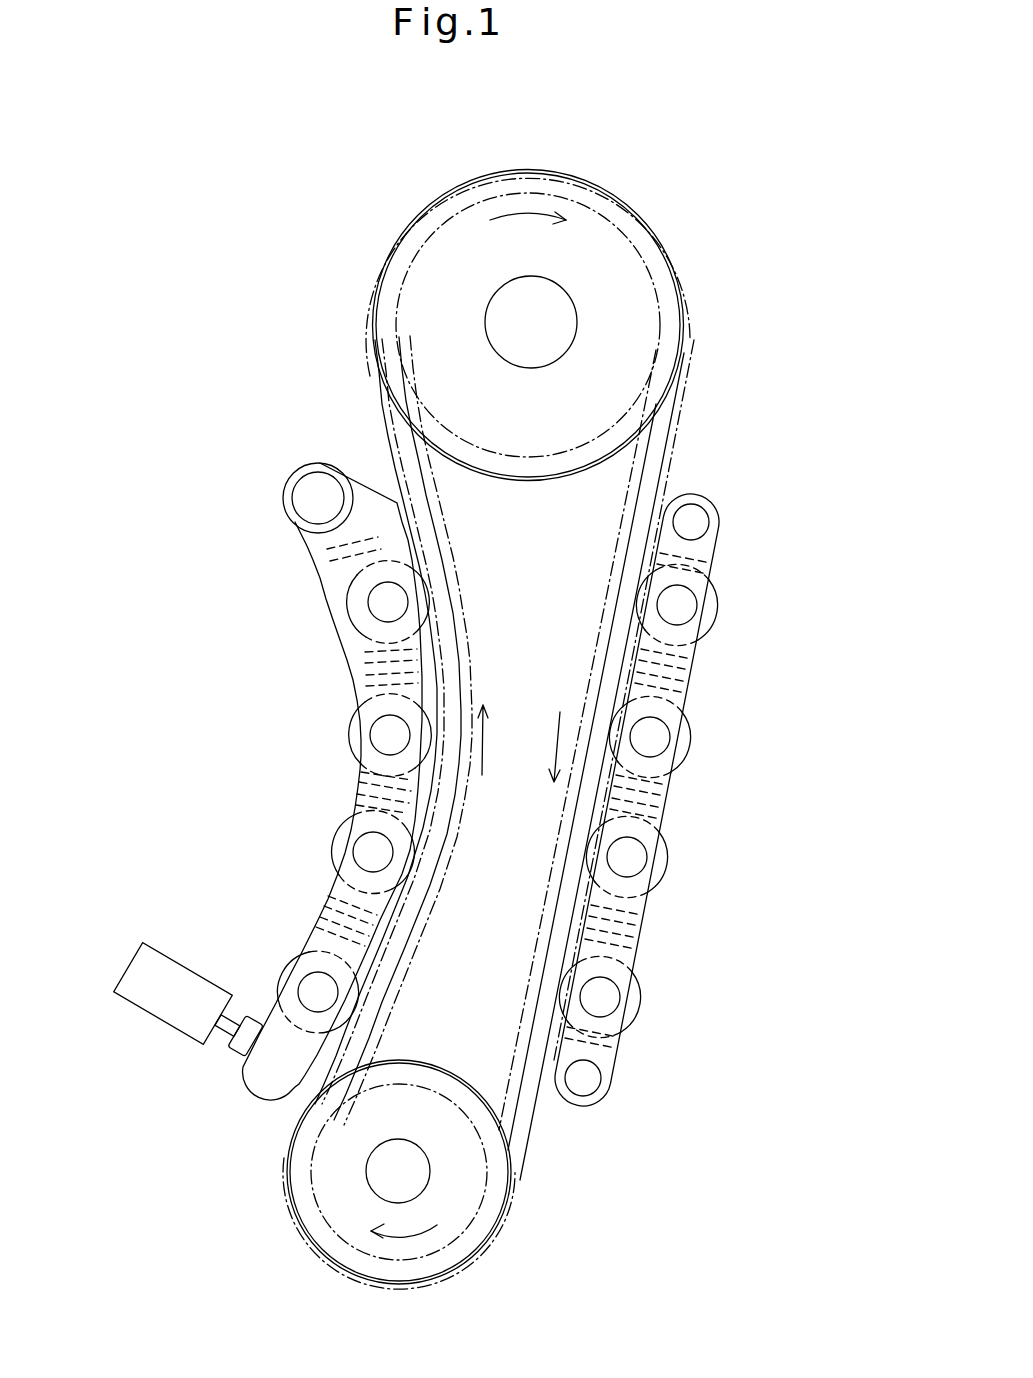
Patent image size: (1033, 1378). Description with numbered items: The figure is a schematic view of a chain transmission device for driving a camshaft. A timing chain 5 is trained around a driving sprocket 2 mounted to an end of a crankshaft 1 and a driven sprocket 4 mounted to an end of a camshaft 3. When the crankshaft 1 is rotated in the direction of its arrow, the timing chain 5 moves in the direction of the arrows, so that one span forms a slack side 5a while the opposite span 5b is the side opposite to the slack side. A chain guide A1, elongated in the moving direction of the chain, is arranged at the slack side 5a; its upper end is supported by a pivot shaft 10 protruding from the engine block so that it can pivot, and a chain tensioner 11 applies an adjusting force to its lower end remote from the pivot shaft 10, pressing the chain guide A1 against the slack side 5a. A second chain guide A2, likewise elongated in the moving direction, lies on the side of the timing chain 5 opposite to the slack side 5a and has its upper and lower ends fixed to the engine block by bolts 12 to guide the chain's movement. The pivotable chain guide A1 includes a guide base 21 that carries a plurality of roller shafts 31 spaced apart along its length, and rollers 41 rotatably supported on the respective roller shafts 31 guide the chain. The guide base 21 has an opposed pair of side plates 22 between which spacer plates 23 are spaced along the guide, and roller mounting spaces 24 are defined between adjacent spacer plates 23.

The crankshaft 1 is at (372, 1162).
The driving sprocket 2 is at (470, 1213).
The camshaft 3 is at (495, 323).
The driven sprocket 4 is at (625, 263).
The timing chain 5 is at (534, 733).
The slack side 5a is at (441, 509).
The tension side chain span 5b is at (647, 478).
The pivot shaft 10 is at (303, 497).
The chain tensioner 11 is at (133, 934).
The bolts 12 is at (702, 523).
The guide base 21 is at (497, 791).
The side plates 22 is at (370, 792).
The spacer plates 23 is at (657, 800).
The roller mounting spaces 24 is at (340, 565).
The roller shafts 31 is at (388, 735).
The rollers 41 is at (427, 727).
The chain guide A1 is at (304, 776).
The chain guide A2 is at (682, 812).